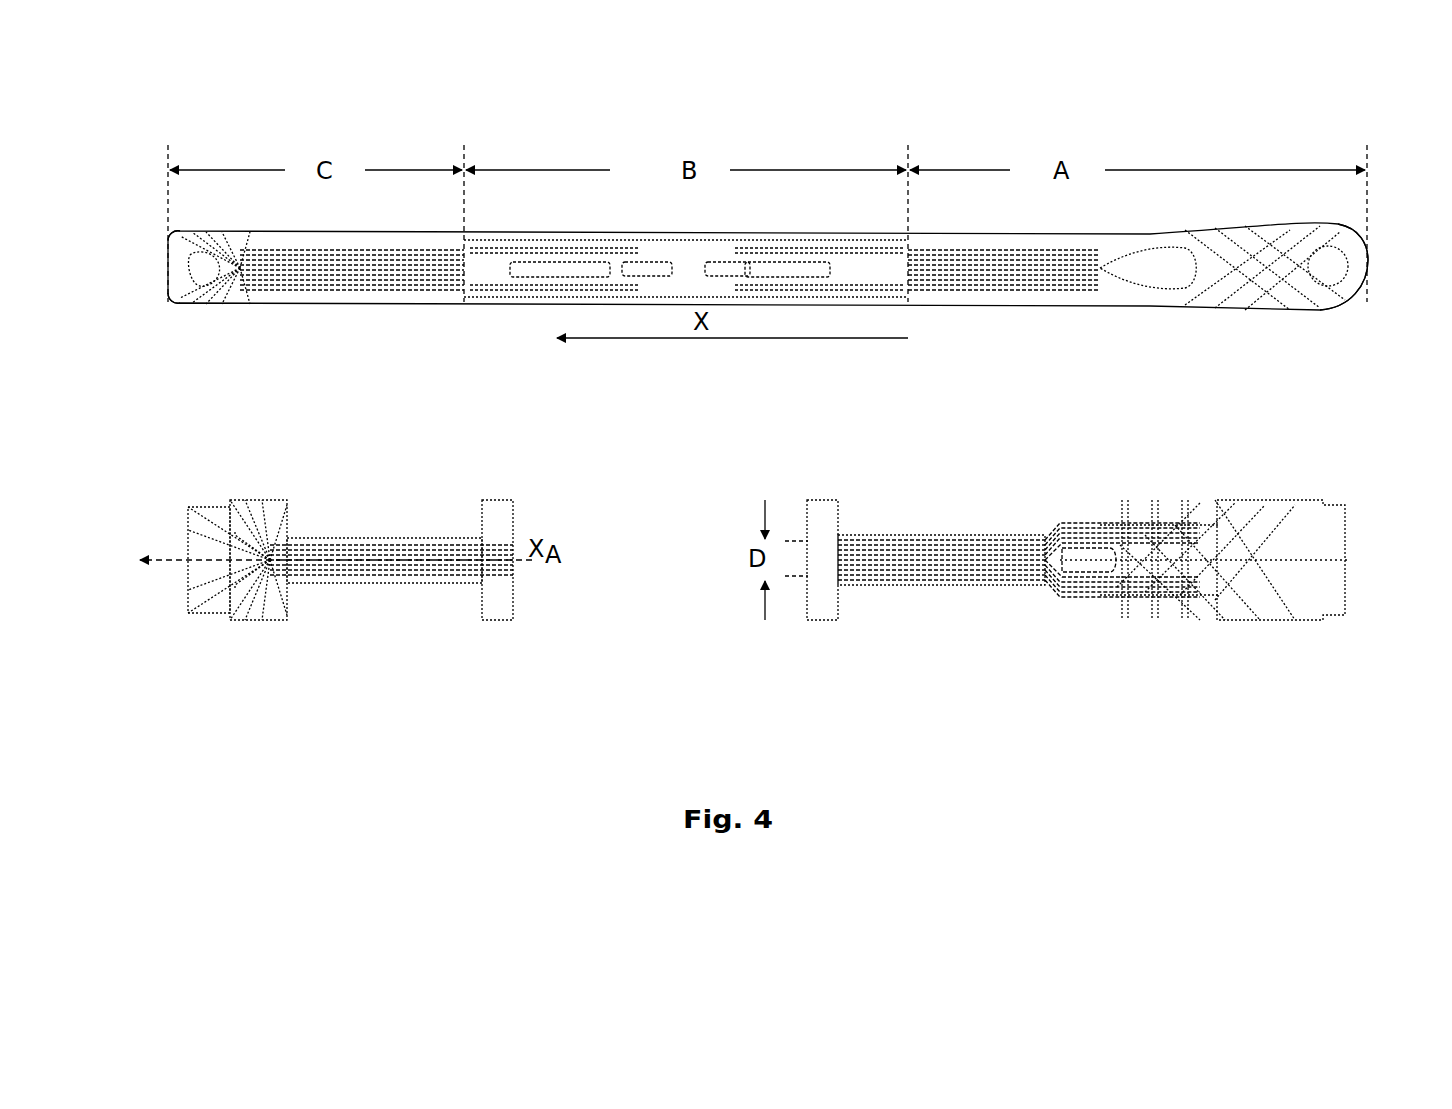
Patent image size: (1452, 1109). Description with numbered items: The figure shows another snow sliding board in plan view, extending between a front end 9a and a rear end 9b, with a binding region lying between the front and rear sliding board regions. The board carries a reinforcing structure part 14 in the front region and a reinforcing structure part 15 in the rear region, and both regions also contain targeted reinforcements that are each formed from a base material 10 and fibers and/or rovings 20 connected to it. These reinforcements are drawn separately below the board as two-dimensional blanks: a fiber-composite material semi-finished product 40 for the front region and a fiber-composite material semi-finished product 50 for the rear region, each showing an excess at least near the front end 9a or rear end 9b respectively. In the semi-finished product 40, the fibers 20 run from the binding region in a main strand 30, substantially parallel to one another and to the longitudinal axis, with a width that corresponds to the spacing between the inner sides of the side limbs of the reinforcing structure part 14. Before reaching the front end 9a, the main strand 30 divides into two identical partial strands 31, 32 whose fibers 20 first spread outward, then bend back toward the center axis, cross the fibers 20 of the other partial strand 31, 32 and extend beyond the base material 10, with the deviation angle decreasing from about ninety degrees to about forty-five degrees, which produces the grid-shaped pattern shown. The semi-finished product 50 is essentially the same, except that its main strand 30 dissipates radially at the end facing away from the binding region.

The front end of the sliding board 9a is at (1366, 268).
The rear end of the sliding board 9b is at (167, 258).
The base material 10 is at (185, 262).
The reinforcing structure part 14 is at (1075, 295).
The reinforcing structure part 15 is at (352, 292).
The fibers and/or rovings 20 is at (285, 268).
The main strand 30 is at (390, 572).
The first partial strand 31 is at (1072, 533).
The second partial strand 32 is at (1080, 585).
The fiber-composite material semi-finished product 40 is at (985, 510).
The fiber-composite material semi-finished product 50 is at (398, 512).